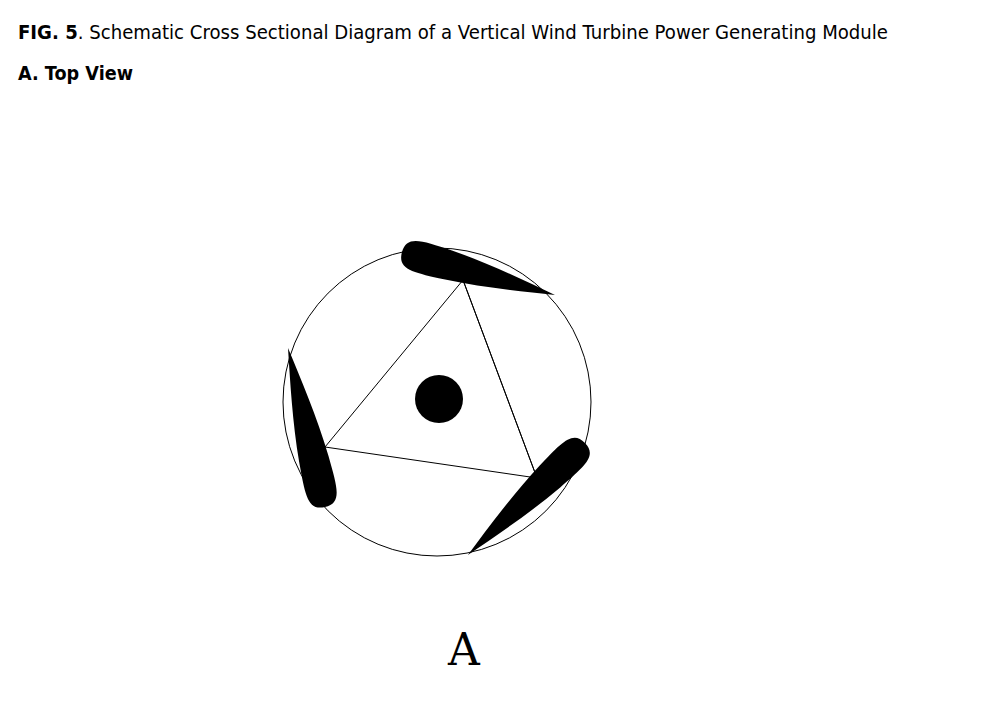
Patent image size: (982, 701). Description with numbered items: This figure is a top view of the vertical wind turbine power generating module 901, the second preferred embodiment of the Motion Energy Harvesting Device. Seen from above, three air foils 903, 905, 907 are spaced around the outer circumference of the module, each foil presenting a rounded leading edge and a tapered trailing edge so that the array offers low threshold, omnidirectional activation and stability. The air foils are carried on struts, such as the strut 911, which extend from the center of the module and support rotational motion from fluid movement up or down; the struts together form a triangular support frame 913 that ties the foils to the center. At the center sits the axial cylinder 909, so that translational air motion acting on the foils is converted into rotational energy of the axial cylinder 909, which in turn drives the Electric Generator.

The vertical wind turbine power generating module 901 is at (329, 265).
The air foil 903 is at (480, 255).
The air foil 905 is at (292, 427).
The air foil 907 is at (545, 509).
The axial cylinder 909 is at (463, 400).
The strut 911 is at (503, 388).
The support frame 913 is at (588, 348).